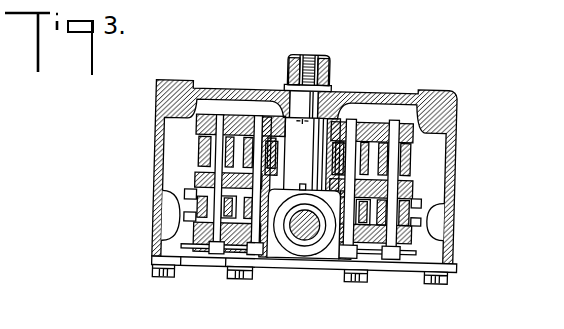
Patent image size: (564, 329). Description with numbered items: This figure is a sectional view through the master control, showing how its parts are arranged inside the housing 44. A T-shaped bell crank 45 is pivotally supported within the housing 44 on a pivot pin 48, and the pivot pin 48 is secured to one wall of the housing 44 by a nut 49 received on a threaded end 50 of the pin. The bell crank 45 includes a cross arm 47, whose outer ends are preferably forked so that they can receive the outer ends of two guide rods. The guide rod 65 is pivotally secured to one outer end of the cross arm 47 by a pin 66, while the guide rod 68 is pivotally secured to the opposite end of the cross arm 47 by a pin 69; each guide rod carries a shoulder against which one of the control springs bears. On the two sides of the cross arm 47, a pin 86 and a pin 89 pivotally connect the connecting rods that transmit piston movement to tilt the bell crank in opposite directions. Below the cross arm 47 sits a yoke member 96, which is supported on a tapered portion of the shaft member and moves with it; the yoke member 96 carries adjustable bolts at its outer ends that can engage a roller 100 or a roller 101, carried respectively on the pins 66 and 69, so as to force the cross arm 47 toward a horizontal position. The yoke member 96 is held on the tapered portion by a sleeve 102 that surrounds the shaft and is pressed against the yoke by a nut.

The housing 44 is at (210, 92).
The bell crank 45 is at (398, 97).
The cross arm 47 is at (376, 118).
The pivot pin 48 is at (328, 88).
The nut 49 is at (324, 64).
The threaded end 50 is at (300, 58).
The guide rod 65 is at (199, 155).
The pin 66 is at (212, 163).
The guide rod 68 is at (411, 157).
The pin 69 is at (408, 165).
The pin 86 is at (352, 261).
The pin 89 is at (259, 121).
The yoke member 96 is at (226, 275).
The roller 100 is at (201, 218).
The roller 101 is at (429, 220).
The sleeve 102 is at (304, 245).